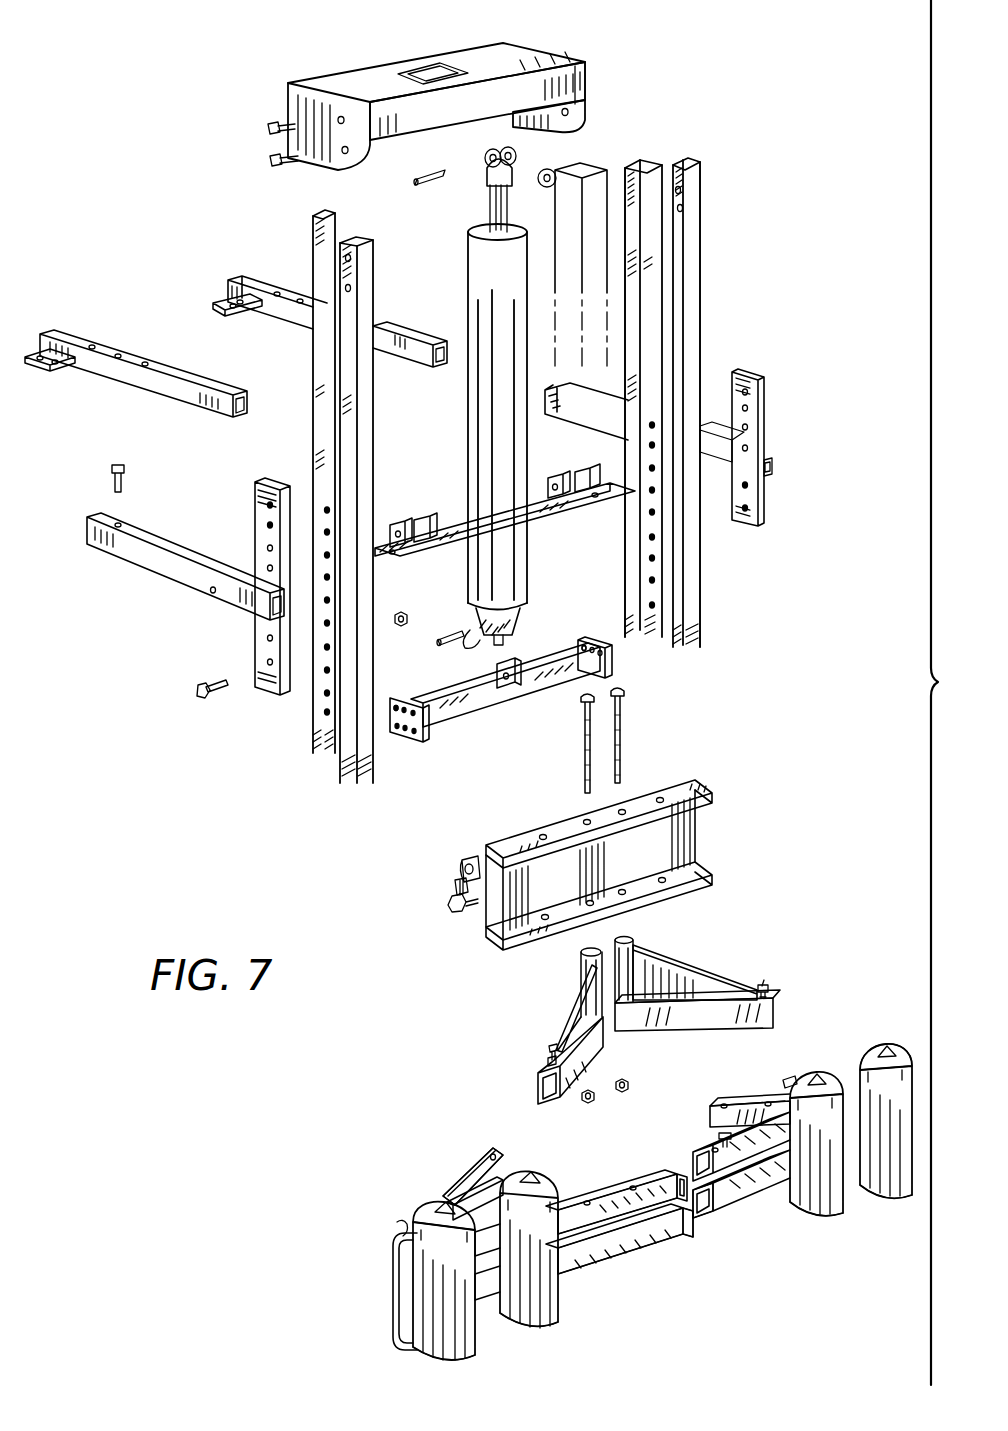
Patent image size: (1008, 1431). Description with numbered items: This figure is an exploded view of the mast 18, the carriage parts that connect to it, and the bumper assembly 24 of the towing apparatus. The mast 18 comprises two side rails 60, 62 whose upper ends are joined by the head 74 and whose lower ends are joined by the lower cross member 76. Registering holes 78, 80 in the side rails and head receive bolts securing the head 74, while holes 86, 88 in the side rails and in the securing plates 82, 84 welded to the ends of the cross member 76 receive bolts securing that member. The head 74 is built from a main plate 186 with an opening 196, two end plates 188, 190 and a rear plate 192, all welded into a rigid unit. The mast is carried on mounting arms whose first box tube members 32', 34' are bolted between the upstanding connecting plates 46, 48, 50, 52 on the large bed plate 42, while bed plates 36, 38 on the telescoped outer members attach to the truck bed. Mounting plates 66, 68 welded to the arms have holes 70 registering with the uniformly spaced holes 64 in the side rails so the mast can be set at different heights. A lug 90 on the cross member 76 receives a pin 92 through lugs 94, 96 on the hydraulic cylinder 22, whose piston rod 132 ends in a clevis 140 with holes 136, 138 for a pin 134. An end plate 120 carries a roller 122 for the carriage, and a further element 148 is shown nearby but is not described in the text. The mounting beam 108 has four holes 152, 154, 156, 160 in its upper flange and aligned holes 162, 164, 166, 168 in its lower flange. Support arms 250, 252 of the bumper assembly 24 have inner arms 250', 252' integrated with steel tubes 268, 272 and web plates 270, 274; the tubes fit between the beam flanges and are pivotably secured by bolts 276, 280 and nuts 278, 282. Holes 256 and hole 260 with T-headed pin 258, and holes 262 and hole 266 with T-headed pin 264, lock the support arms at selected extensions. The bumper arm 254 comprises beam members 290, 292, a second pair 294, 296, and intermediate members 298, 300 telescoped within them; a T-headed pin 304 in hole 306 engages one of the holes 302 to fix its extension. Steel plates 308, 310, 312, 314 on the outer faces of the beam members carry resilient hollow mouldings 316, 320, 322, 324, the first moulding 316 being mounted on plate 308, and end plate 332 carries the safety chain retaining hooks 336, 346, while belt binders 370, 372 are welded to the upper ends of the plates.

The mast 18 is at (727, 281).
The hydraulic cylinder 22 is at (515, 356).
The bumper assembly 24 is at (383, 1180).
The first box tube member 32' is at (185, 567).
The first box tube member 34' is at (641, 312).
The bed plate 36 is at (72, 372).
The bed plate 38 is at (218, 315).
The large bed plate 42 is at (460, 536).
The connecting plate 46 is at (583, 472).
The connecting plate 48 is at (553, 477).
The connecting plate 50 is at (428, 517).
The connecting plate 52 is at (396, 520).
The side rail 60 is at (323, 412).
The side rail 62 is at (697, 367).
The holes 64 is at (655, 580).
The mounting plate 66 is at (265, 631).
The mounting plate 68 is at (758, 524).
The holes 70 is at (748, 508).
The head 74 is at (554, 63).
The lower cross member 76 is at (472, 710).
The holes 78 is at (683, 208).
The holes 80 is at (345, 150).
The securing plate 82 is at (426, 742).
The securing plate 84 is at (612, 662).
The holes 86 is at (690, 634).
The holes 88 is at (600, 650).
The lug 90 is at (510, 660).
The pin 92 is at (436, 643).
The lug 94 is at (490, 640).
The lug 96 is at (520, 618).
The mounting beam 108 is at (712, 826).
The end plate 120 is at (462, 912).
The roller 122 is at (466, 856).
The piston rod 132 is at (490, 208).
The pin 134 is at (420, 183).
The hole 136 is at (487, 176).
The hole 138 is at (506, 160).
The clevis 140 is at (483, 162).
The pin 148 is at (456, 883).
The hole 152 is at (543, 834).
The hole 154 is at (587, 819).
The hole 156 is at (623, 809).
The hole 160 is at (660, 797).
The hole 162 is at (545, 914).
The hole 164 is at (590, 900).
The hole 166 is at (622, 889).
The hole 168 is at (662, 877).
The main plate 186 is at (495, 64).
The end plate 188 is at (335, 166).
The end plate 190 is at (578, 100).
The rear plate 192 is at (585, 66).
The opening 196 is at (433, 70).
The support arm 250 is at (465, 1155).
The inner arm 250' is at (527, 1061).
The support arm 252 is at (751, 1034).
The inner arm 252' is at (697, 1029).
The bumper arm 254 is at (648, 1254).
The holes 256 is at (488, 1158).
The T-headed pin 258 is at (552, 1046).
The hole 260 is at (546, 1060).
The holes 262 is at (768, 1103).
The T-headed pin 264 is at (766, 985).
The hole 266 is at (772, 993).
The steel tube 268 is at (583, 948).
The steel web plate 270 is at (578, 988).
The steel tube 272 is at (633, 942).
The steel web plate 274 is at (673, 977).
The bolt 276 is at (583, 744).
The nut 278 is at (592, 1104).
The bolt 280 is at (627, 724).
The nut 282 is at (630, 1083).
The box tube beam member 290 is at (737, 1196).
The box tube beam member 292 is at (732, 1204).
The box tube beam member 294 is at (583, 1244).
The box tube beam member 296 is at (574, 1252).
The intermediate box tube beam member 298 is at (686, 1222).
The intermediate box tube beam member 300 is at (650, 1250).
The holes 302 is at (587, 1201).
The T-headed pin 304 is at (718, 1137).
The hole 306 is at (712, 1150).
The steel plate 308 is at (418, 1348).
The steel plate 310 is at (503, 1320).
The steel plate 312 is at (793, 1207).
The steel plate 314 is at (860, 1190).
The roller 316 is at (427, 1289).
The hollow moulding 320 is at (548, 1256).
The hollow moulding 322 is at (797, 1153).
The hollow moulding 324 is at (902, 1131).
The end plate 332 is at (399, 1283).
The safety chain retaining hook 336 is at (397, 1226).
The retaining hook 346 is at (900, 1044).
The belt binder 370 is at (447, 1190).
The belt binder 372 is at (825, 1057).